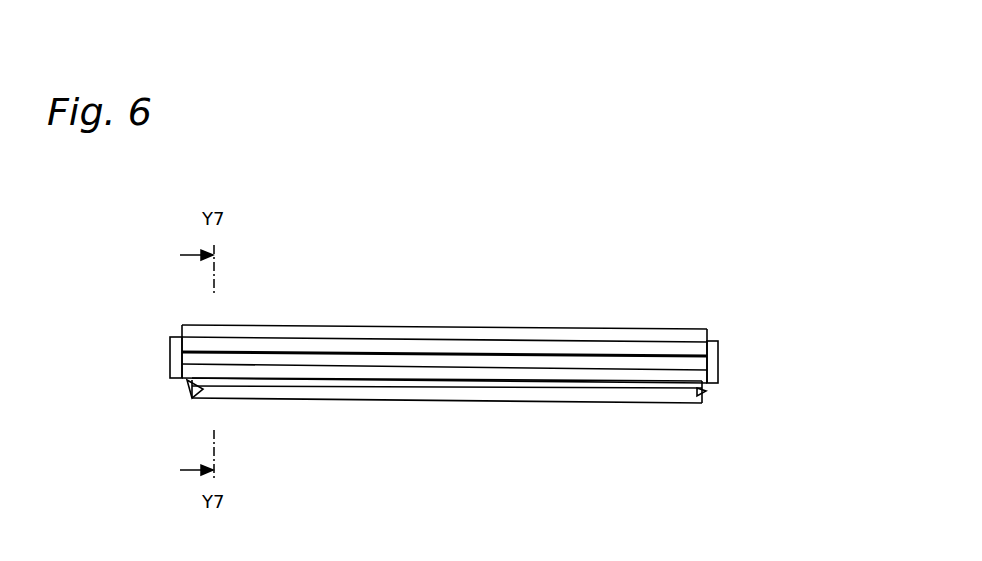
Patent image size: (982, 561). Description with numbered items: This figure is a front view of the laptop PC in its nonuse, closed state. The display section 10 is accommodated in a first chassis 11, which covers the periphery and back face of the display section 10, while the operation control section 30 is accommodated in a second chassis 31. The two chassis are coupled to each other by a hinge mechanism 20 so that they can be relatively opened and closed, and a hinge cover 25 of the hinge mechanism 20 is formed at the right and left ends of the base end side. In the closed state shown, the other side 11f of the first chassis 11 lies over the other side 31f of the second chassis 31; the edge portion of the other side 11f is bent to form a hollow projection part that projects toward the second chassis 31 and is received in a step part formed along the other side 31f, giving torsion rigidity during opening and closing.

The display section 10 is at (582, 328).
The first chassis 11 is at (493, 329).
The other side of the first chassis 11f is at (366, 345).
The hinge mechanism 20 is at (160, 352).
The hinge cover 25 is at (176, 337).
The operation control section 30 is at (575, 405).
The second chassis 31 is at (452, 388).
The other side of the second chassis 31f is at (348, 358).